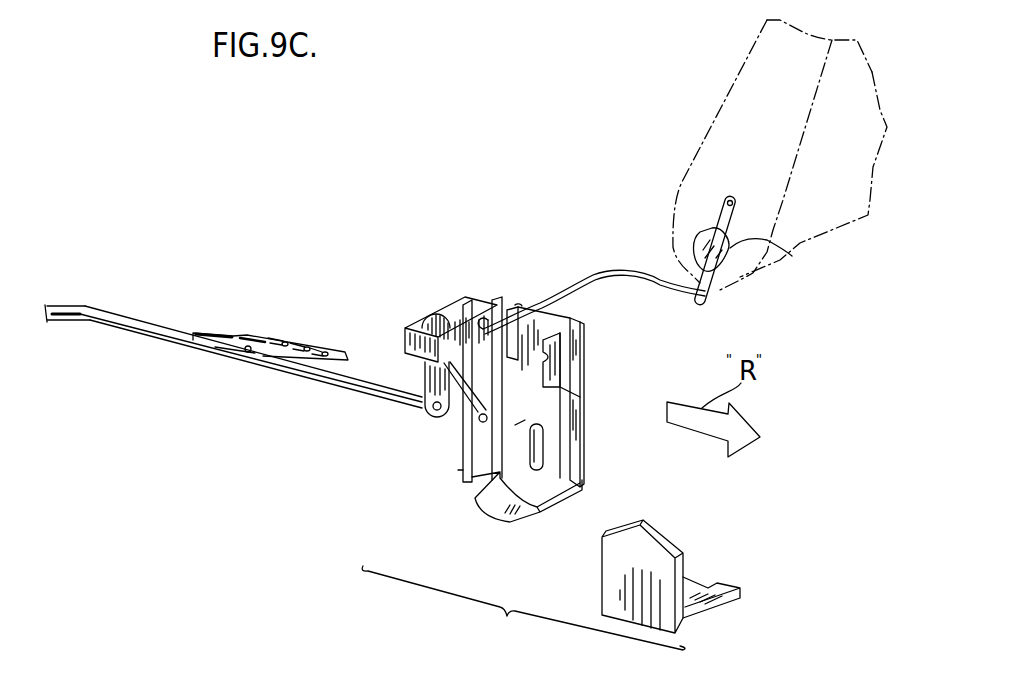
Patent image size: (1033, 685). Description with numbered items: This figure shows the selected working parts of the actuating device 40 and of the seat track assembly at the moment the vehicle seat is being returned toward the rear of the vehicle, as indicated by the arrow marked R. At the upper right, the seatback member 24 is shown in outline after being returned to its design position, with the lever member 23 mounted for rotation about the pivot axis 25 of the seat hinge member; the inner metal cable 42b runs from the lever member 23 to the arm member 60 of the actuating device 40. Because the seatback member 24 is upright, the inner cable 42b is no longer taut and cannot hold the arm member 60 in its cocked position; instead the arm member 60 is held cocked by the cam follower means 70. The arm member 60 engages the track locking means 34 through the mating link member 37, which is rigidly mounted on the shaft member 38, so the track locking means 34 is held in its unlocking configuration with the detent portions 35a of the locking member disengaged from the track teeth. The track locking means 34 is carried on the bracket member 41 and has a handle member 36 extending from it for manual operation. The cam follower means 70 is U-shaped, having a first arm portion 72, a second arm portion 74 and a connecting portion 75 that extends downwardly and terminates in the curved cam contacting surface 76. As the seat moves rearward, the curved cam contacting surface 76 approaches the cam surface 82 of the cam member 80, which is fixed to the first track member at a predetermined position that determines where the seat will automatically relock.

The lever member 23 is at (707, 287).
The seatback member 24 is at (847, 88).
The pivot axis 25 is at (792, 256).
The track locking means 34 is at (236, 333).
The detent portions 35a is at (318, 350).
The handle member 36 is at (48, 305).
The mating link member 37 is at (437, 312).
The shaft member 38 is at (283, 372).
The actuating device 40 is at (523, 609).
The bracket member 41 is at (248, 352).
The inner metal cable 42b is at (580, 283).
The arm member 60 is at (482, 347).
The cam follower means 70 is at (580, 383).
The first arm portion 72 is at (460, 470).
The second arm portion 74 is at (583, 446).
The connecting portion 75 is at (520, 422).
The curved cam contacting surface 76 is at (523, 525).
The cam member 80 is at (695, 615).
The cam surface 82 is at (670, 545).